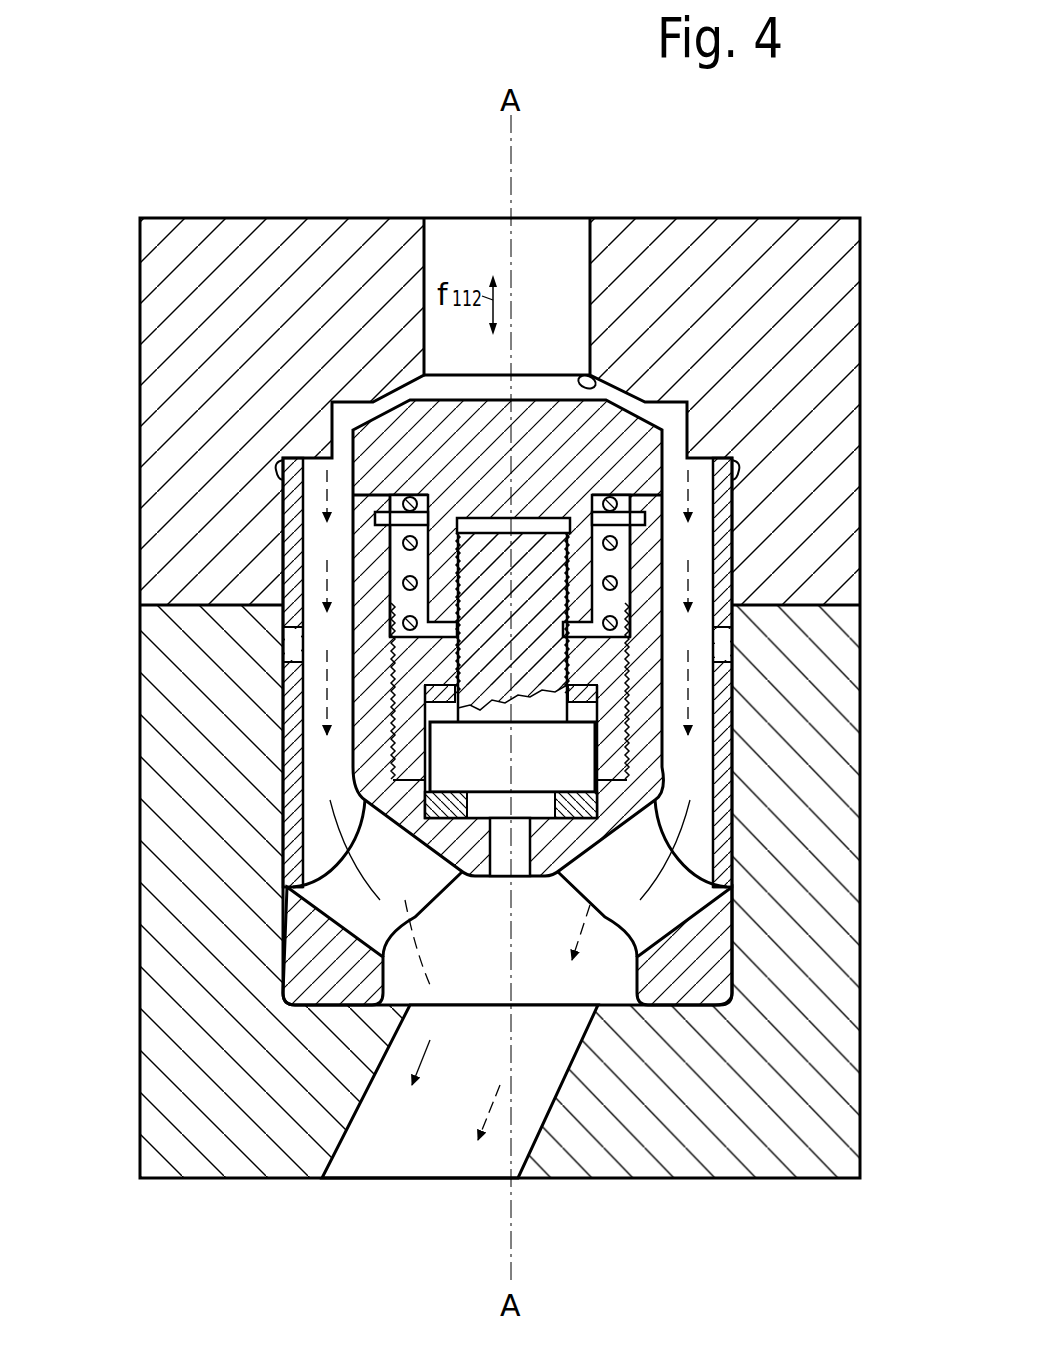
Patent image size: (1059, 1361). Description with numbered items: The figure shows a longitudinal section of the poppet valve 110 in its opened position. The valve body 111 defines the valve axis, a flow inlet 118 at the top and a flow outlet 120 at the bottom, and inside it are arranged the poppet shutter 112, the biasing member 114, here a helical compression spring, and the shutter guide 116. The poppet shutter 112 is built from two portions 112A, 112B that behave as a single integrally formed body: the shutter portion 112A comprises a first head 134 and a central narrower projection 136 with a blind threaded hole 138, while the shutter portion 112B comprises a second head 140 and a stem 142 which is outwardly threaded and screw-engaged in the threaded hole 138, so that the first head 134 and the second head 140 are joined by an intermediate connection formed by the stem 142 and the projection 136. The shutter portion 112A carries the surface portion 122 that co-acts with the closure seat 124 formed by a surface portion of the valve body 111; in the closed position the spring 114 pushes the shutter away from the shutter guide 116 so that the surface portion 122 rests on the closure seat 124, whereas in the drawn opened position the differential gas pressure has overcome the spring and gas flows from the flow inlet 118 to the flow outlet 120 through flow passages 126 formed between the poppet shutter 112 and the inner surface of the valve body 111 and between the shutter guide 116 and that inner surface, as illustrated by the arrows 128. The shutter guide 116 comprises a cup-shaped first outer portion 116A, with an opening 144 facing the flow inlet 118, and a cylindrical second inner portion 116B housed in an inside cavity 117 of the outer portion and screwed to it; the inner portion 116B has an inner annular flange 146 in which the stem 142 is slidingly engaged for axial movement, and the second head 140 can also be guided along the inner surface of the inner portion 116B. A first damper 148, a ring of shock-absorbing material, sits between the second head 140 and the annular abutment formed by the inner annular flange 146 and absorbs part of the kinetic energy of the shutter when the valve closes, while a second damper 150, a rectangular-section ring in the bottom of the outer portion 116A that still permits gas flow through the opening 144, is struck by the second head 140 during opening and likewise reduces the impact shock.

The poppet valve 110 is at (150, 186).
The valve body 111 is at (461, 731).
The poppet shutter 112 is at (506, 656).
The shutter portion 112A is at (398, 408).
The shutter portion 112B is at (628, 802).
The biasing member 114 is at (450, 596).
The shutter guide 116 is at (515, 670).
The first outer portion 116A is at (741, 468).
The second inner portion 116B is at (668, 722).
The inside cavity 117 is at (648, 527).
The flow inlet 118 is at (538, 247).
The flow outlet 120 is at (400, 1155).
The surface portion 122 is at (650, 404).
The closure seat 124 is at (587, 372).
The flow passages 126 is at (292, 819).
The arrows 128 is at (722, 858).
The first head 134 is at (449, 400).
The central narrower projection 136 is at (400, 524).
The blind threaded hole 138 is at (395, 633).
The second head 140 is at (524, 772).
The stem 142 is at (505, 560).
The opening 144 is at (560, 931).
The inner annular flange 146 is at (690, 620).
The first damper 148 is at (598, 689).
The second damper 150 is at (437, 942).